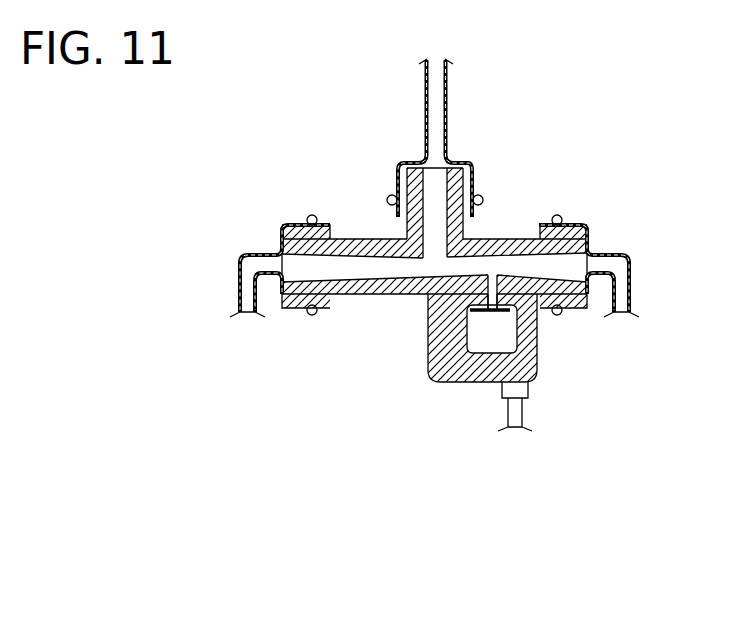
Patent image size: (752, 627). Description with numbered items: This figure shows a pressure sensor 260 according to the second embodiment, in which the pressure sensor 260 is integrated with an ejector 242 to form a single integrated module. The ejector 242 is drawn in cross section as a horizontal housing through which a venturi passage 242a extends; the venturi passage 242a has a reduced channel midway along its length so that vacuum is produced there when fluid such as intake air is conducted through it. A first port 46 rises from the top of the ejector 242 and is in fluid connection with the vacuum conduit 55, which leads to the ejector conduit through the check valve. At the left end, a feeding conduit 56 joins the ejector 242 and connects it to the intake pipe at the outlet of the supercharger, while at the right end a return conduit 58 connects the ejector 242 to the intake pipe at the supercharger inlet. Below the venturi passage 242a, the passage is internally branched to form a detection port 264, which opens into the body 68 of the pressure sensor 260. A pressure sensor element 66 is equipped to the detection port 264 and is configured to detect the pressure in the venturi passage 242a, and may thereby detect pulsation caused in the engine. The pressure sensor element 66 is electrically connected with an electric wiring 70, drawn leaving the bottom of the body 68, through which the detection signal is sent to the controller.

The ejector 242 is at (334, 191).
The venturi passage 242a is at (477, 263).
The first port 46 is at (435, 192).
The vacuum conduit 55 is at (427, 130).
The feeding conduit 56 is at (237, 291).
The return conduit 58 is at (628, 287).
The pressure sensor element 66 is at (478, 312).
The body 68 is at (453, 370).
The detection port 264 is at (513, 315).
The electric wiring 70 is at (496, 464).
The pressure sensor 260 is at (499, 416).